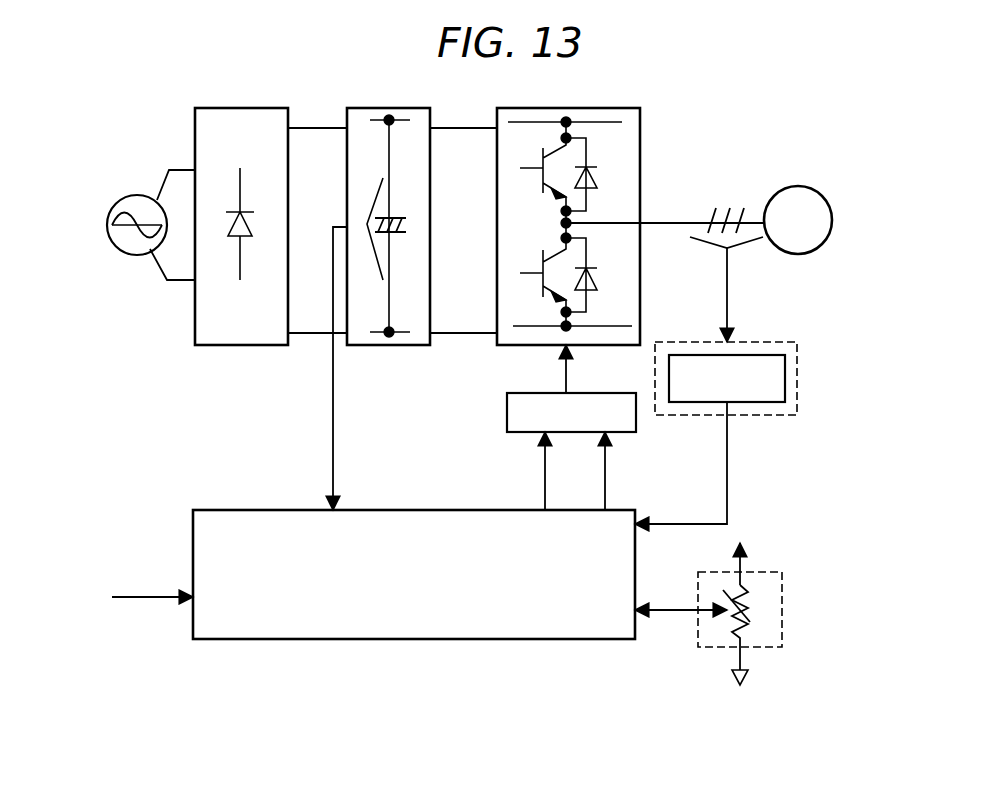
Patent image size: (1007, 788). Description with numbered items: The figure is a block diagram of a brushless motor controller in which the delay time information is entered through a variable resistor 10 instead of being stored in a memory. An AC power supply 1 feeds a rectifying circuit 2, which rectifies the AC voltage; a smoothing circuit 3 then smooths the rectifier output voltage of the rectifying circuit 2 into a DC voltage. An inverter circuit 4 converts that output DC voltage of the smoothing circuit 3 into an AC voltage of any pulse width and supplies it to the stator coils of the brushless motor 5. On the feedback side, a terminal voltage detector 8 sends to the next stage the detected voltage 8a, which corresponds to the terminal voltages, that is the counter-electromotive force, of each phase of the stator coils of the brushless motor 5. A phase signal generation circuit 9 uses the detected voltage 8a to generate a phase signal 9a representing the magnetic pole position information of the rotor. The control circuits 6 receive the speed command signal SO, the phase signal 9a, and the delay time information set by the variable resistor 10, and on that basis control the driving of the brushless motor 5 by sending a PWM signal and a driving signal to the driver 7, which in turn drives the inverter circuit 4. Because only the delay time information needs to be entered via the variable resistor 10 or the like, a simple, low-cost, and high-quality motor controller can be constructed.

The AC power supply 1 is at (116, 208).
The rectifying circuit 2 is at (238, 108).
The smoothing circuit 3 is at (388, 108).
The inverter circuit 4 is at (561, 108).
The brushless motor 5 is at (831, 208).
The control circuits 6 is at (193, 526).
The driver 7 is at (507, 393).
The terminal voltage detector 8 is at (733, 210).
The detected voltage 8a is at (728, 286).
The phase signal generation circuit 9 is at (750, 416).
The phase signal 9a is at (728, 490).
The variable resistor 10 is at (782, 607).